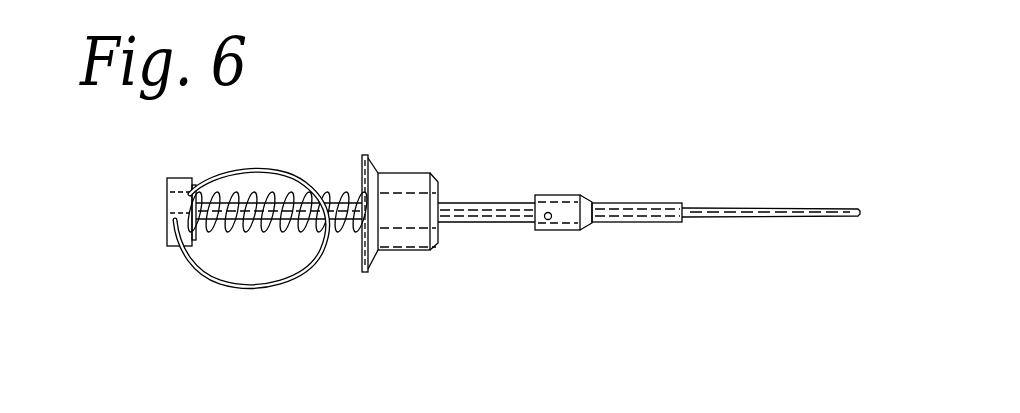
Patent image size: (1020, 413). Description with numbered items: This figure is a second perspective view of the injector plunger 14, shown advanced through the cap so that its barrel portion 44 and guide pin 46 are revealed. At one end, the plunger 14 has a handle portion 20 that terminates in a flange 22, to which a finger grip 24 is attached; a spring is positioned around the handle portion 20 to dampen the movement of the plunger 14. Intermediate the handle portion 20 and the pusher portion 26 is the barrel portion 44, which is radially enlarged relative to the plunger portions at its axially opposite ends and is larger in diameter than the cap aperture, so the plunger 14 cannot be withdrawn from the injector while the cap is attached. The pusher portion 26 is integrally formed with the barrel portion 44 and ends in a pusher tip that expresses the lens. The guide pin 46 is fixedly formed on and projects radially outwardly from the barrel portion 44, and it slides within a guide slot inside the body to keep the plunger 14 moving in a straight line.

The plunger 14 is at (319, 167).
The handle portion 20 is at (253, 213).
The flange 22 is at (167, 205).
The finger grip 24 is at (197, 268).
The pusher portion 26 is at (652, 203).
The barrel portion 44 is at (555, 200).
The guide pin 46 is at (549, 219).